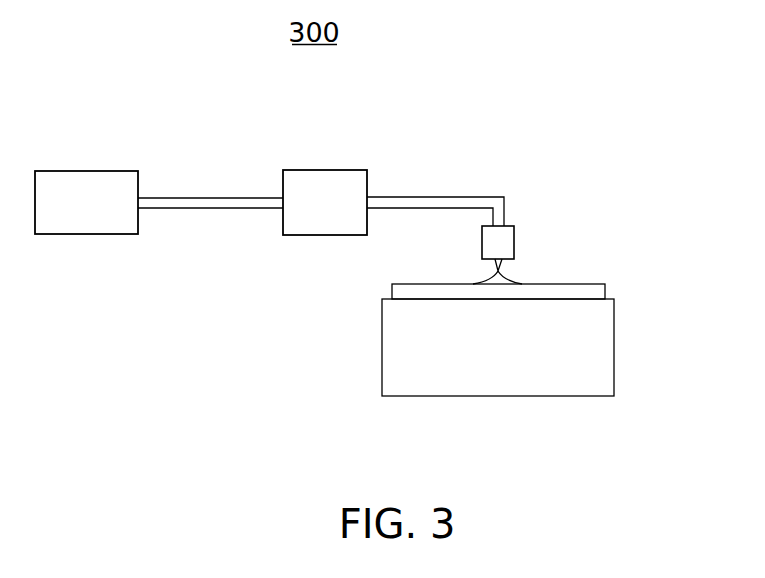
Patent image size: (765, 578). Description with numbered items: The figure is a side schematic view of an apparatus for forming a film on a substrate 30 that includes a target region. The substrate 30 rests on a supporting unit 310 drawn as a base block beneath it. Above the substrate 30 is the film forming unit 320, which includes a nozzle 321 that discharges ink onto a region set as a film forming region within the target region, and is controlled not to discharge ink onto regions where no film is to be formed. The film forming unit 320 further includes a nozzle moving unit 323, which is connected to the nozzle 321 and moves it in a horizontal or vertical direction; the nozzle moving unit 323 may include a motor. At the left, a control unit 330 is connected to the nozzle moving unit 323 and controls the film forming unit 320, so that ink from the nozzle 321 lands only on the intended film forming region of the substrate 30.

The control unit 330 is at (90, 234).
The nozzle moving unit 323 is at (325, 170).
The film forming unit 320 is at (435, 197).
The nozzle 321 is at (515, 242).
The substrate 30 is at (594, 284).
The stage 310 is at (607, 348).